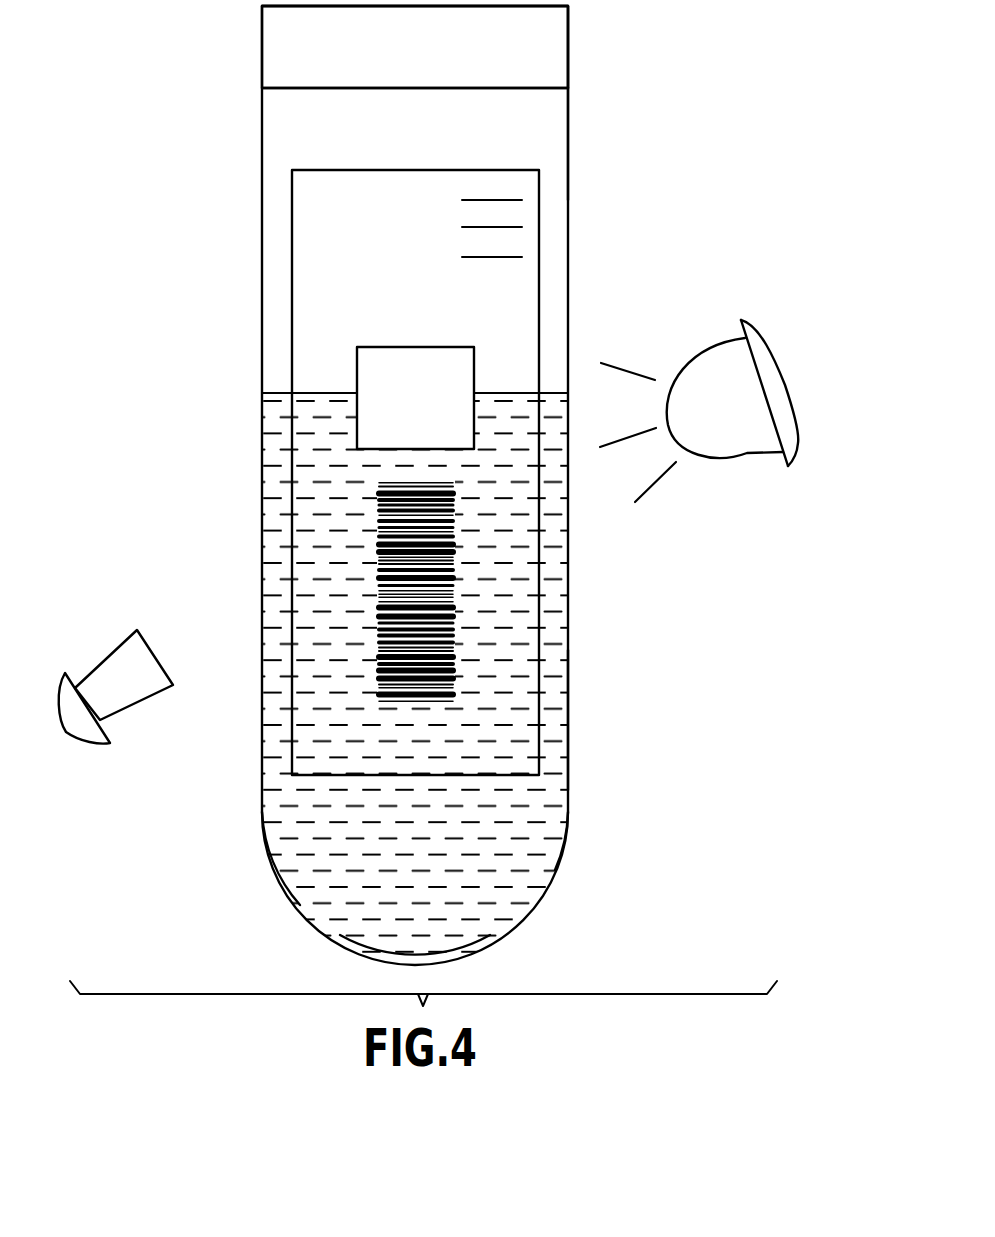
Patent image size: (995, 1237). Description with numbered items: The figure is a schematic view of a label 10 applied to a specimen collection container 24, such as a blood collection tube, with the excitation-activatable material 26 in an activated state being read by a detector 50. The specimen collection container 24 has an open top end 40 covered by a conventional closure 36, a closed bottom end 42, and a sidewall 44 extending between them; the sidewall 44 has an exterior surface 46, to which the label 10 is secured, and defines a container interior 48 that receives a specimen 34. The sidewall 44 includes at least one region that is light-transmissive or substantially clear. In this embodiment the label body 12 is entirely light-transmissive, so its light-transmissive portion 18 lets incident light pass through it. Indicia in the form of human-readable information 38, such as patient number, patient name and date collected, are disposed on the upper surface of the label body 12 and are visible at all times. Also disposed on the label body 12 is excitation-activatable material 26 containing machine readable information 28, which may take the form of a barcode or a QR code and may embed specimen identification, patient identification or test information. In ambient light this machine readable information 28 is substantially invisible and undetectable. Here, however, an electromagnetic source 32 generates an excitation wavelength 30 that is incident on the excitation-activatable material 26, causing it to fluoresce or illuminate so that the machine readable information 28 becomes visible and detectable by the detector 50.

The label 10 is at (318, 285).
The label body 12 is at (315, 337).
The light-transmissive portion 18 is at (500, 295).
The specimen collection container 24 is at (530, 111).
The excitation-activatable material 26 is at (370, 365).
The machine readable information 28 is at (468, 581).
The excitation wavelength 30 is at (623, 370).
The electromagnetic source 32 is at (743, 452).
The specimen 34 is at (530, 835).
The closure 36 is at (550, 36).
The human-readable information 38 is at (477, 190).
The open top end 40 is at (280, 86).
The closed bottom end 42 is at (478, 953).
The sidewall 44 is at (570, 780).
The exterior surface 46 is at (569, 731).
The container interior 48 is at (303, 913).
The detector 50 is at (102, 660).